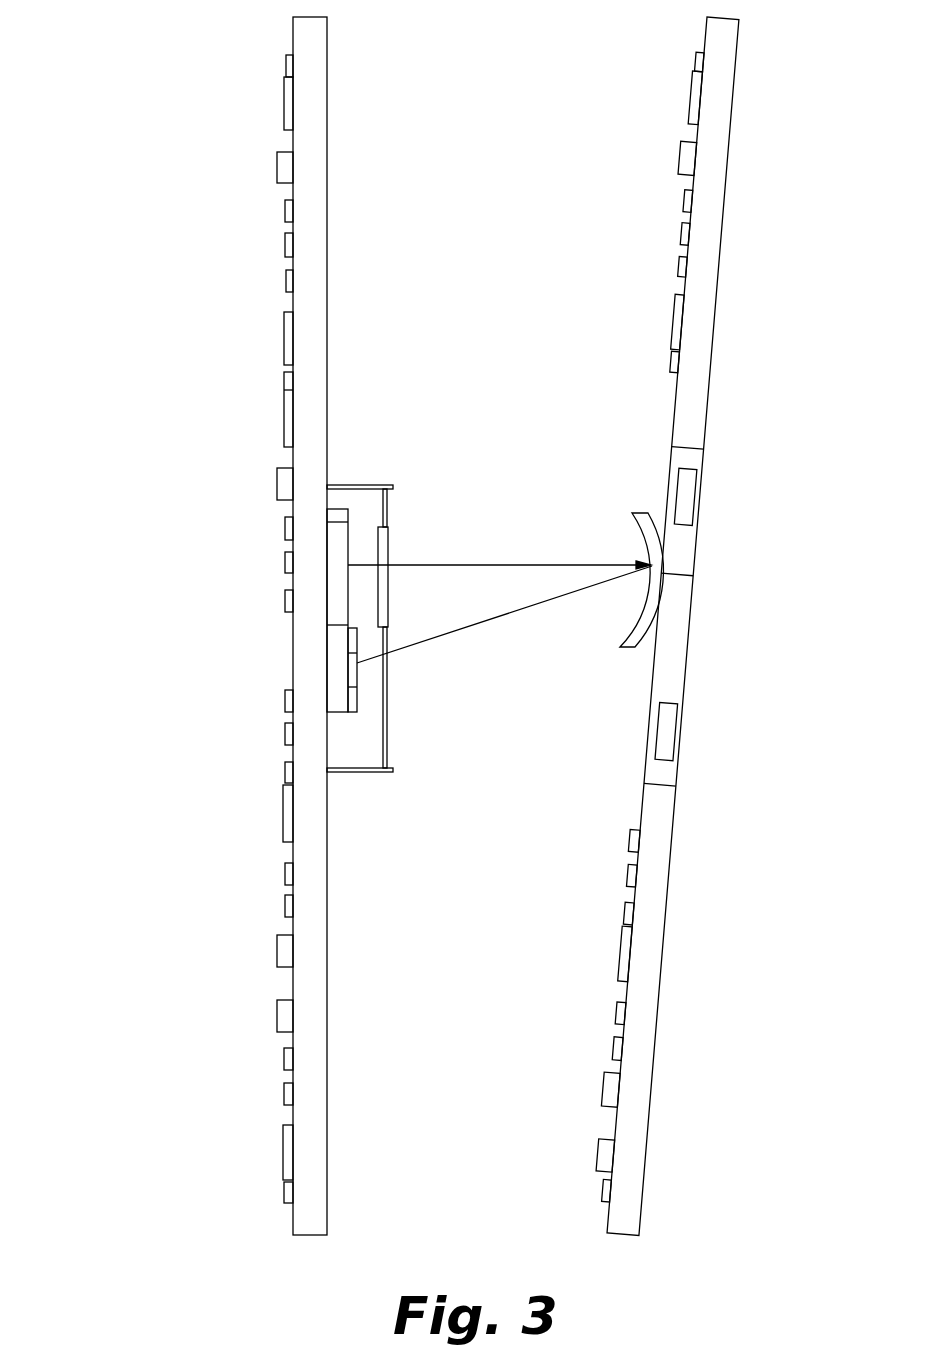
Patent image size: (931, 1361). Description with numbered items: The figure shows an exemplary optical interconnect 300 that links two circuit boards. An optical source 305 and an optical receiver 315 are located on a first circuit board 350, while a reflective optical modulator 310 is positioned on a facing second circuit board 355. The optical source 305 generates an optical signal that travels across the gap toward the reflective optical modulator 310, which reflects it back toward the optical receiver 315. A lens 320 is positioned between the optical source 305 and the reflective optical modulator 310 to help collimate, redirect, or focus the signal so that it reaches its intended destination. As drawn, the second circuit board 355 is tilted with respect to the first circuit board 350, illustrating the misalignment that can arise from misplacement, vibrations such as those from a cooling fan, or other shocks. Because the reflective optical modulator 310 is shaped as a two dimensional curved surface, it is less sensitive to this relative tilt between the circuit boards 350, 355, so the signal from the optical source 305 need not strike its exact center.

The optical interconnect 300 is at (158, 46).
The optical source 305 is at (335, 545).
The reflective optical modulator 310 is at (660, 580).
The optical receiver 315 is at (355, 677).
The lens 320 is at (385, 541).
The first circuit board 350 is at (310, 55).
The second circuit board 355 is at (716, 52).